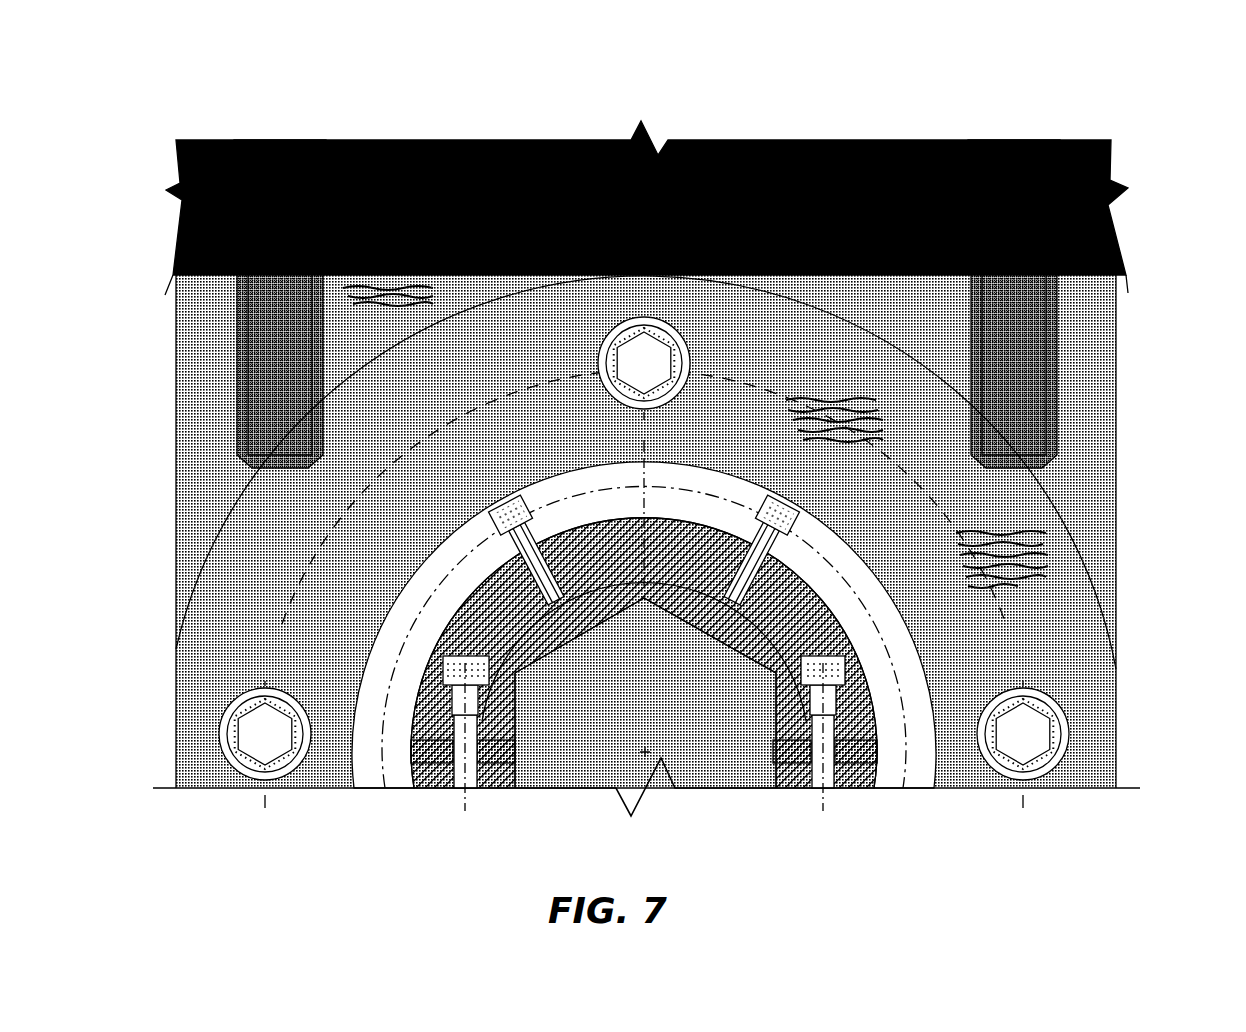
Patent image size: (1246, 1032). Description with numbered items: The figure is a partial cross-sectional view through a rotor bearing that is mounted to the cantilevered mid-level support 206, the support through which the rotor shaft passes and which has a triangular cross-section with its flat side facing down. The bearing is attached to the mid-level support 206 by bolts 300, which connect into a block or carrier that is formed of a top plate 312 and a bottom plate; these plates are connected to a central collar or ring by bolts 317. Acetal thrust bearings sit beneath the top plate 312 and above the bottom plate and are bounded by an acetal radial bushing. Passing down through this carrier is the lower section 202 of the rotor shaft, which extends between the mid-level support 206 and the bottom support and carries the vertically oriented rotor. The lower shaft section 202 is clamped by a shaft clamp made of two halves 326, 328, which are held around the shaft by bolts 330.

The lower section of rotor shaft 202 is at (723, 781).
The cantilevered mid-level support 206 is at (515, 125).
The bolts 300 is at (262, 120).
The top plate 312 is at (1088, 338).
The bolts 317 is at (663, 341).
The shaft clamp half 326 is at (652, 605).
The shaft clamp half 328 is at (508, 767).
The bolts 330 is at (458, 781).